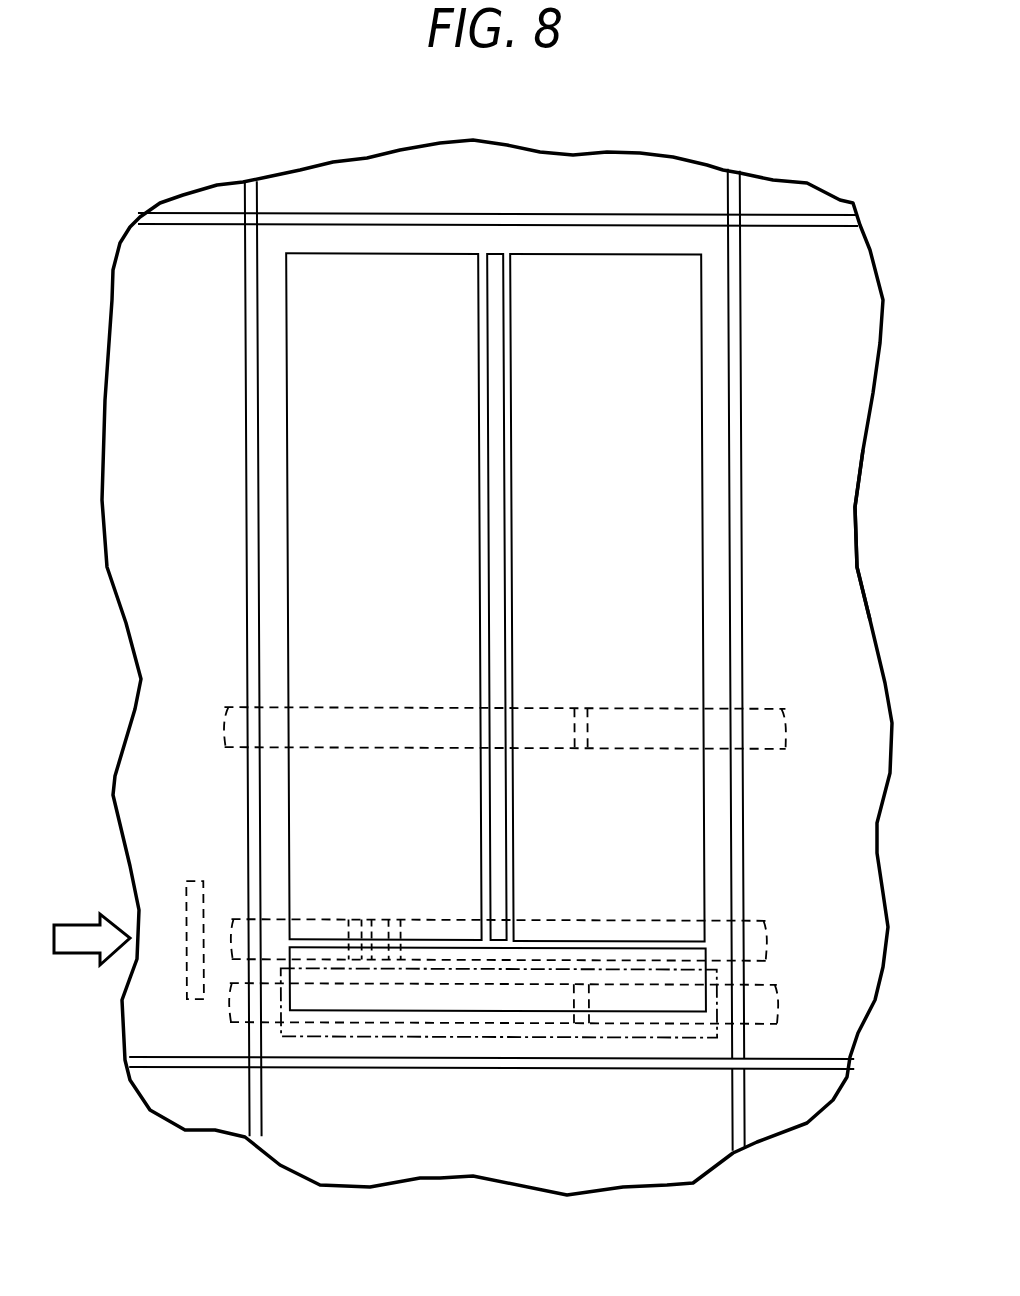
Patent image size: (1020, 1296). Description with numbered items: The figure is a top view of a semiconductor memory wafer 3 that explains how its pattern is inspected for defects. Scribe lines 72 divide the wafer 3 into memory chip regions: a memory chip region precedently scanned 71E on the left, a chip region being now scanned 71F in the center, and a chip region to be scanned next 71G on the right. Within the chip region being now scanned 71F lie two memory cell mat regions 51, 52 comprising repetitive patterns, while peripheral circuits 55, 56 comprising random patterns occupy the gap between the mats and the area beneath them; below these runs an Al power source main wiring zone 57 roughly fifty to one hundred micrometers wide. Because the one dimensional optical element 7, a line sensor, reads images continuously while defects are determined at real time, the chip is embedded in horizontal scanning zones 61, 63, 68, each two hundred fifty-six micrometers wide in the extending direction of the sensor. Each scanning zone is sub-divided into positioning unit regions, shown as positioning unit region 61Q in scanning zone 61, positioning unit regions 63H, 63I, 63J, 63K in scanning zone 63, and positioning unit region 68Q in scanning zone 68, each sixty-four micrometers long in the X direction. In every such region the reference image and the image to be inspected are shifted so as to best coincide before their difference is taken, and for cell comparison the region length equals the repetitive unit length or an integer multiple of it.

The semiconductor wafer 3 is at (547, 1198).
The one dimensional optical element 7 is at (183, 1002).
The memory cell mat region 51 is at (343, 273).
The memory cell mat region 52 is at (638, 278).
The peripheral circuit 55 is at (495, 465).
The peripheral circuit 56 is at (374, 1040).
The Al power source main wiring zone 57 is at (470, 1050).
The scanning zone 61 is at (773, 996).
The positioning unit region 61Q is at (578, 1050).
The scanning zone 63 is at (762, 935).
The positioning unit region 63H is at (358, 920).
The positioning unit region 63I is at (372, 920).
The positioning unit region 63J is at (380, 920).
The positioning unit region 63K is at (398, 921).
The scanning zone 68 is at (783, 733).
The positioning unit region 68Q is at (580, 750).
The memory chip region precedently scanned 71E is at (139, 554).
The chip region being now scanned 71F is at (717, 388).
The chip region to be scanned next 71G is at (840, 533).
The scribe line 72 is at (737, 1130).